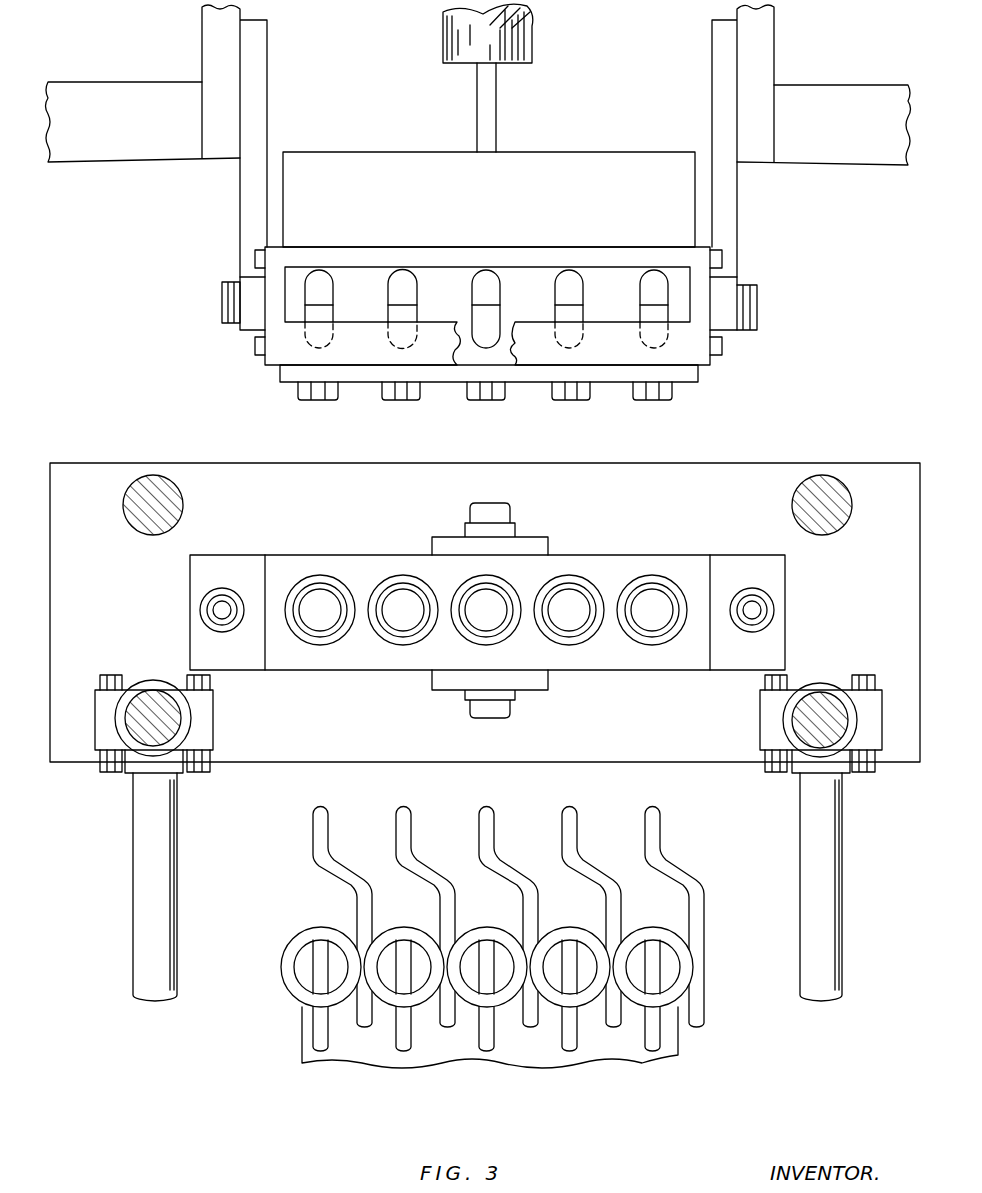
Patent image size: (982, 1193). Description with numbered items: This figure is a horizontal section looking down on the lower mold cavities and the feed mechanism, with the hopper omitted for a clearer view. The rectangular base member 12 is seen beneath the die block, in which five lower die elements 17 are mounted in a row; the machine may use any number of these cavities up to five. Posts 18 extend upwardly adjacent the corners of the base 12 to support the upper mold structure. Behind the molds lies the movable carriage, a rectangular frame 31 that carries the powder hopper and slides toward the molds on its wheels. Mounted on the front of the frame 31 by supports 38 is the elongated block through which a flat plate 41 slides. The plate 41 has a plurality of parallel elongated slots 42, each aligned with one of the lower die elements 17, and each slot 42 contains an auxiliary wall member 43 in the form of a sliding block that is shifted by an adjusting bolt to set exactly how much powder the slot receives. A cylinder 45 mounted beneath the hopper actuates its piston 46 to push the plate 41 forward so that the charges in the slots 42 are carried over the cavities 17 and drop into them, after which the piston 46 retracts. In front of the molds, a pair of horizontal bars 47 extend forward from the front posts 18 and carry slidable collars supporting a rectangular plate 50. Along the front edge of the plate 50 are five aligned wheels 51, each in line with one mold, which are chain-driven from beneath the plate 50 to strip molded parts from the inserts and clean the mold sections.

The rectangular base member 12 is at (66, 758).
The lower die elements 17 is at (318, 577).
The posts 18 is at (143, 490).
The rectangular frame 31 is at (109, 144).
The supports 38 is at (248, 200).
The flat plate 41 is at (280, 348).
The elongated slots 42 is at (652, 303).
The auxiliary wall member 43 is at (327, 348).
The cylinder 45 is at (455, 52).
The piston 46 is at (488, 113).
The horizontal bars 47 is at (165, 895).
The rectangular plate 50 is at (338, 1055).
The wheels 51 is at (298, 975).